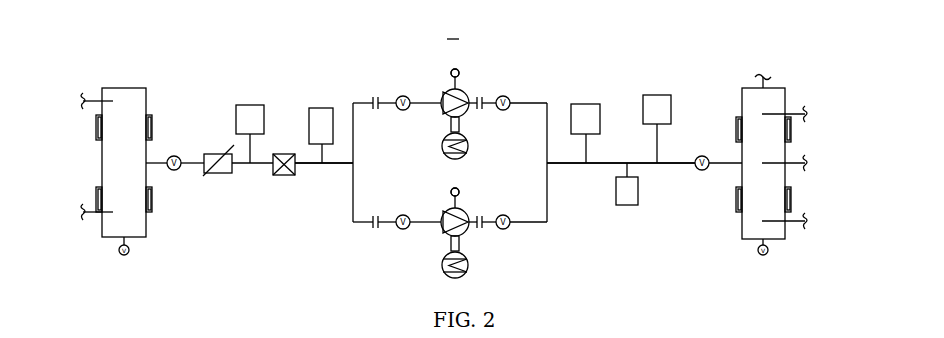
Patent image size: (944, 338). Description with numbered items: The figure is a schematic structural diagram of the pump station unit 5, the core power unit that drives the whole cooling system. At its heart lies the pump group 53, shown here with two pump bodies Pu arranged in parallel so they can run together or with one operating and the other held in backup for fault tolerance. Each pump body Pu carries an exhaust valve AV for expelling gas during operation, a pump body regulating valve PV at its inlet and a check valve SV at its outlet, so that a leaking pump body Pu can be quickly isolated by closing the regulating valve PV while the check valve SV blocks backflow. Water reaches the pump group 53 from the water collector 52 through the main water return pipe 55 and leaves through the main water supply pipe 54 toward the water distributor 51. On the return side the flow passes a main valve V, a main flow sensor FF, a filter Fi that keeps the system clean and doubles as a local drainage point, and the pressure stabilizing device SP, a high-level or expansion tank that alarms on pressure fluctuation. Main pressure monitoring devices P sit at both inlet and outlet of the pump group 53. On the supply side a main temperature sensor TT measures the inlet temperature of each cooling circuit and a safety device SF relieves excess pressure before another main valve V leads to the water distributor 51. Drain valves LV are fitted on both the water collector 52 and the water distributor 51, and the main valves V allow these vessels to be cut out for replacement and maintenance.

The pump station unit 5 is at (453, 30).
The water distributor 51 is at (747, 222).
The water collector 52 is at (142, 221).
The pump group 53 is at (490, 80).
The main water supply pipe 54 is at (602, 165).
The main water return pipe 55 is at (335, 166).
The drain valve LV is at (128, 253).
The main valve V is at (175, 157).
The main flow sensor FF is at (220, 176).
The main pressure monitoring device P is at (252, 105).
The filter Fi is at (283, 177).
The pressure stabilizing device SP is at (322, 108).
The pump body Pu is at (442, 92).
The exhaust valve AV is at (462, 187).
The pump body regulating valve PV is at (403, 232).
The check valve SV is at (507, 230).
The main temperature sensor TT is at (657, 95).
The safety device SF is at (628, 207).